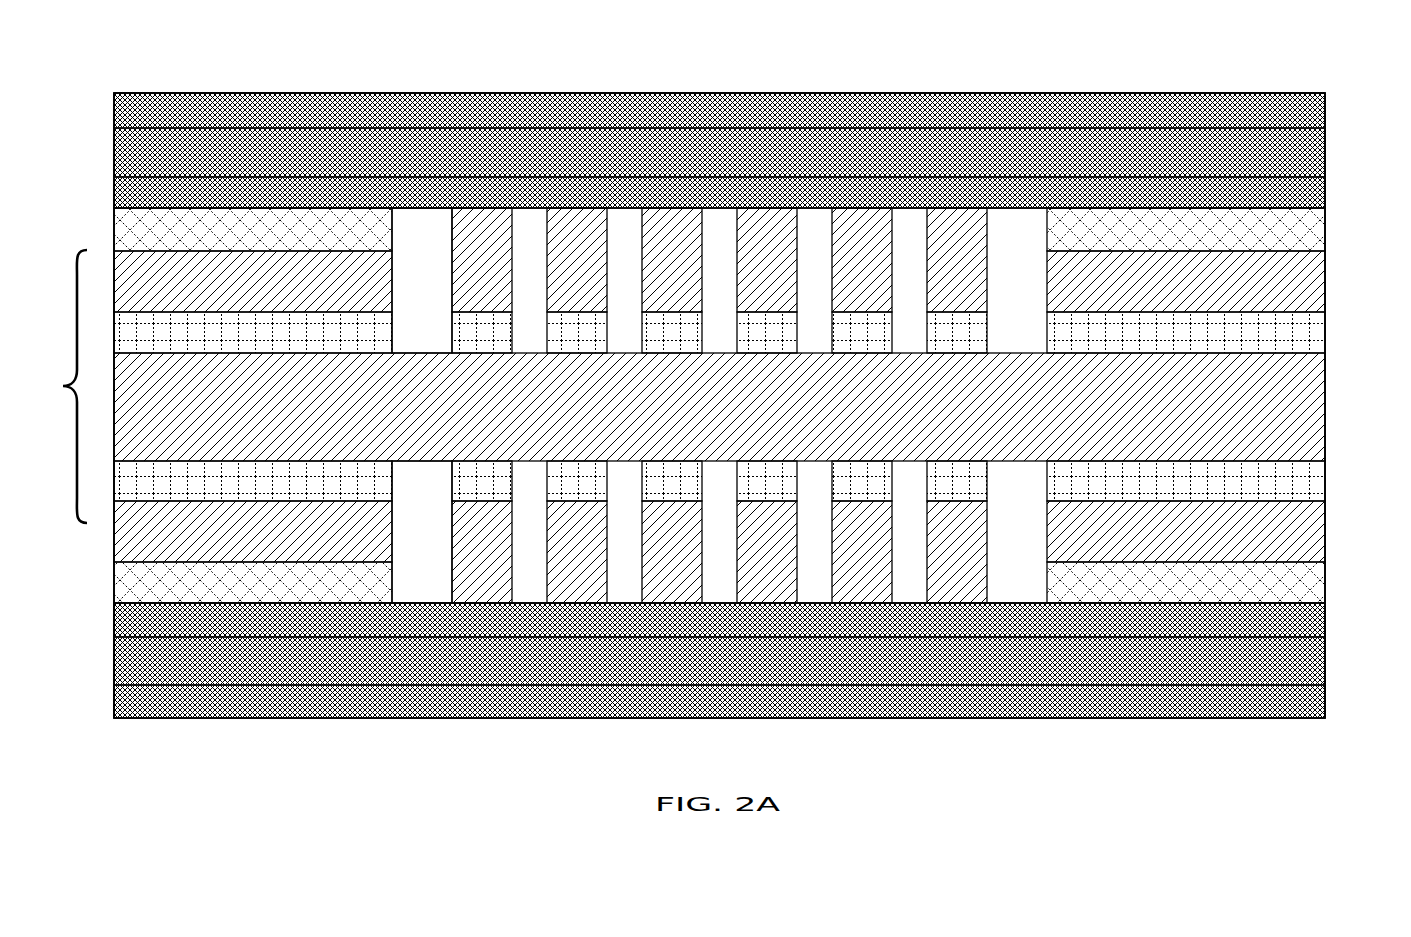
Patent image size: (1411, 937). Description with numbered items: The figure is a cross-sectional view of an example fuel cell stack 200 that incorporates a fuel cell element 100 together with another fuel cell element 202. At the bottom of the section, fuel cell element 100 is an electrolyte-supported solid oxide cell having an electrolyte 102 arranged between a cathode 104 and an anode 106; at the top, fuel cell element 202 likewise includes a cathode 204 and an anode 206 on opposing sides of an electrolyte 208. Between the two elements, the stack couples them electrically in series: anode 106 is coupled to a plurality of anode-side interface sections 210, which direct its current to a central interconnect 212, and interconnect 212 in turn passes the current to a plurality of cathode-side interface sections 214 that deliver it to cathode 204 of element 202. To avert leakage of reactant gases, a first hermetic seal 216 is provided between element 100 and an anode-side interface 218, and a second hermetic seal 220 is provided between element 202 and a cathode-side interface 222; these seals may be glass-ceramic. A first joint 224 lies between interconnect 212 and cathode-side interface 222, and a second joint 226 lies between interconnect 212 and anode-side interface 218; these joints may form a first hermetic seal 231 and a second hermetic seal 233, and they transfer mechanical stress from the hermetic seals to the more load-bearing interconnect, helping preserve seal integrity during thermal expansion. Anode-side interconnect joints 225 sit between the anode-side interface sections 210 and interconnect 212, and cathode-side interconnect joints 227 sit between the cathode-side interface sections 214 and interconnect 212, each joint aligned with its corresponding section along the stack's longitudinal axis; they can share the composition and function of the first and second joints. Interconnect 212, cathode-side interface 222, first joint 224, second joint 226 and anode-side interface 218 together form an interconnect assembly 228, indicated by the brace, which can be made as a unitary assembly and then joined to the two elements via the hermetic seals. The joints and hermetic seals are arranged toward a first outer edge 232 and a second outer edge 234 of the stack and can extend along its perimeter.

The fuel cell element 100 is at (1004, 745).
The electrolyte 102 is at (807, 671).
The cathode 104 is at (785, 711).
The anode 106 is at (770, 630).
The fuel cell stack 200 is at (718, 64).
The fuel cell element 202 is at (1360, 153).
The cathode 204 is at (785, 202).
The anode 206 is at (770, 120).
The electrolyte 208 is at (807, 161).
The anode-side interface sections 210 is at (496, 562).
The interconnect 212 is at (814, 415).
The cathode-side interface sections 214 is at (496, 271).
The first hermetic seal 216 is at (1281, 592).
The anode-side interface 218 is at (1201, 556).
The second hermetic seal 220 is at (1281, 239).
The cathode-side interface 222 is at (1201, 305).
The first joint 224 is at (1262, 342).
The anode-side interconnect joints 225 is at (496, 491).
The second joint 226 is at (1275, 491).
The cathode-side interconnect joints 227 is at (496, 342).
The interconnect assembly 228 is at (78, 508).
The first hermetic seal 231 is at (404, 340).
The first outer edge 232 is at (1360, 663).
The second hermetic seal 233 is at (404, 474).
The second outer edge 234 is at (70, 614).